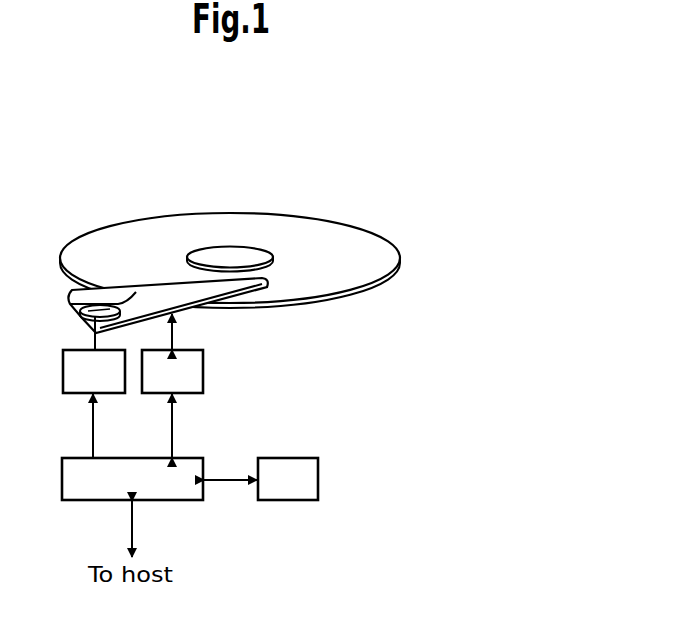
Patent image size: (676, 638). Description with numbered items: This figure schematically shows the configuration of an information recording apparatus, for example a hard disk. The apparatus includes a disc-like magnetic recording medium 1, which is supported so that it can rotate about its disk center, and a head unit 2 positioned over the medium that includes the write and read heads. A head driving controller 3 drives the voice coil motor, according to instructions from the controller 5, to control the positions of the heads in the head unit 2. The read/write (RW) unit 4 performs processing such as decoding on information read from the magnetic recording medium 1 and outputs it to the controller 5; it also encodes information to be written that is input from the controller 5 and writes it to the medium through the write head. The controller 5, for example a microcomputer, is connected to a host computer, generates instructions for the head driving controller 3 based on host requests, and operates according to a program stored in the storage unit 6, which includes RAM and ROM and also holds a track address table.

The magnetic recording medium 1 is at (343, 242).
The head unit 2 is at (184, 307).
The head driving controller 3 is at (94, 371).
The read/write (RW) unit 4 is at (172, 371).
The controller 5 is at (132, 479).
The storage unit 6 is at (288, 479).